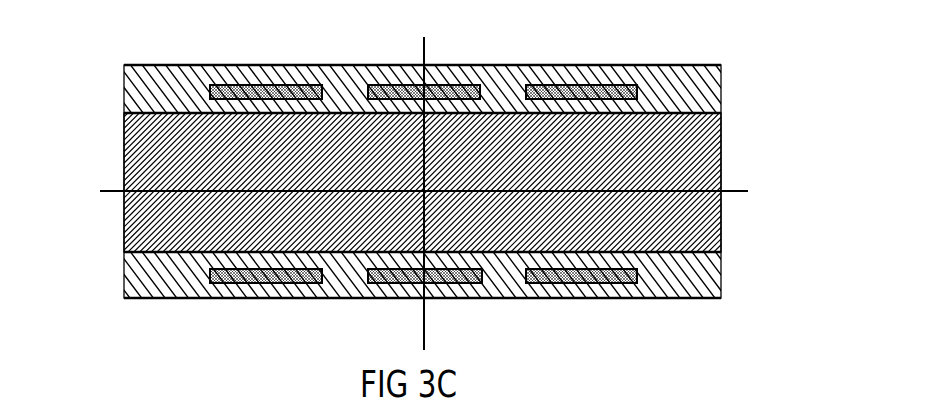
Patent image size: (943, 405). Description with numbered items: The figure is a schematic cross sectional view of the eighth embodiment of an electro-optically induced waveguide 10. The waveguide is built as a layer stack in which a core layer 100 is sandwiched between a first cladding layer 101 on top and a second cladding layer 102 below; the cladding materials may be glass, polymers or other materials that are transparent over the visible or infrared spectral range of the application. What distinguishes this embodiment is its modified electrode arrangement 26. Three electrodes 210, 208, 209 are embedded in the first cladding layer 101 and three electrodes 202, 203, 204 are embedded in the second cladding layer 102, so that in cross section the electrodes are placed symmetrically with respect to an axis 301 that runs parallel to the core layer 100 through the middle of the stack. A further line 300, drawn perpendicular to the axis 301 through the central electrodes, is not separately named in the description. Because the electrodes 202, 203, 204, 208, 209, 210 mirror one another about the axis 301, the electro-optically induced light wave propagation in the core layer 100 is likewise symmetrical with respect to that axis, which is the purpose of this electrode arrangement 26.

The component 10 is at (99, 54).
The electrode arrangement 26 is at (99, 165).
The core layer 100 is at (722, 149).
The first cladding layer 101 is at (722, 87).
The second cladding layer 102 is at (722, 272).
The electrode 202 is at (270, 283).
The electrode 203 is at (472, 283).
The electrode 204 is at (584, 283).
The electrode 208 is at (465, 85).
The electrode 209 is at (578, 85).
The electrode 210 is at (263, 85).
The vertical axis 300 is at (424, 334).
The axis 301 is at (748, 192).